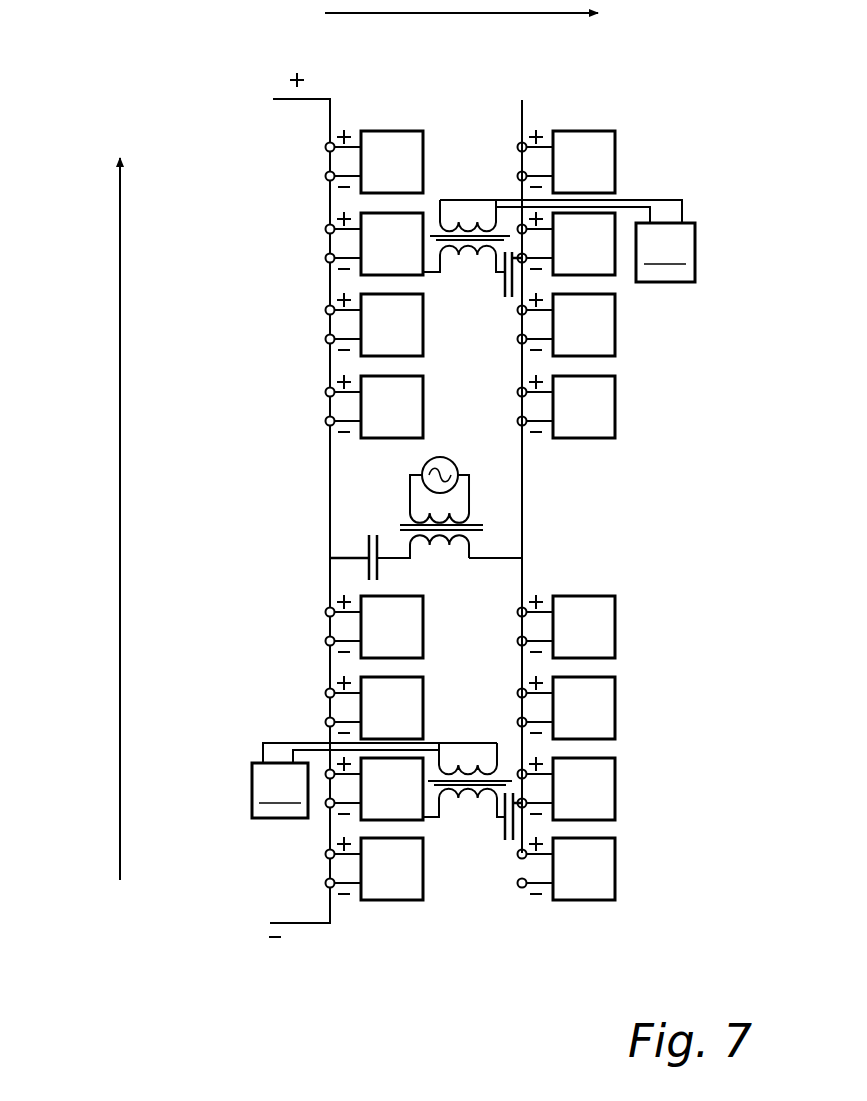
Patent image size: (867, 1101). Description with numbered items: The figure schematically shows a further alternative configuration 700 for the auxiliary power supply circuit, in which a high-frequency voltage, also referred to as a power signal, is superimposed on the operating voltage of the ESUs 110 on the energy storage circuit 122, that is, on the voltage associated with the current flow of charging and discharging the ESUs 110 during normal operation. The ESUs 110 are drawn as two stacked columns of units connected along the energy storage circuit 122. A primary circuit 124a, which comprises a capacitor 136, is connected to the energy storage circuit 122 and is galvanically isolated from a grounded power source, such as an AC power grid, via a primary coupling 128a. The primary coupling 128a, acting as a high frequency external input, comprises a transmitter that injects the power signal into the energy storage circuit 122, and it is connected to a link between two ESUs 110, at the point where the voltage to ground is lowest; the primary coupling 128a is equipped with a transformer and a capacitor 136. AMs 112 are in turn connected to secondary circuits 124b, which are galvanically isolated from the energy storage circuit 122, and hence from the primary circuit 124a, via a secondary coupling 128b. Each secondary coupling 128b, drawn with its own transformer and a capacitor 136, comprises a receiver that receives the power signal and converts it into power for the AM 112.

The alternative configuration 700 is at (158, 73).
The ESU 110 is at (471, 515).
The AM 112 is at (252, 790).
The energy storage circuit 122 is at (522, 472).
The primary circuit 124a is at (492, 558).
The secondary circuit 124b is at (658, 200).
The primary coupling 128a is at (388, 516).
The secondary coupling 128b is at (433, 218).
The capacitor 136 is at (504, 282).